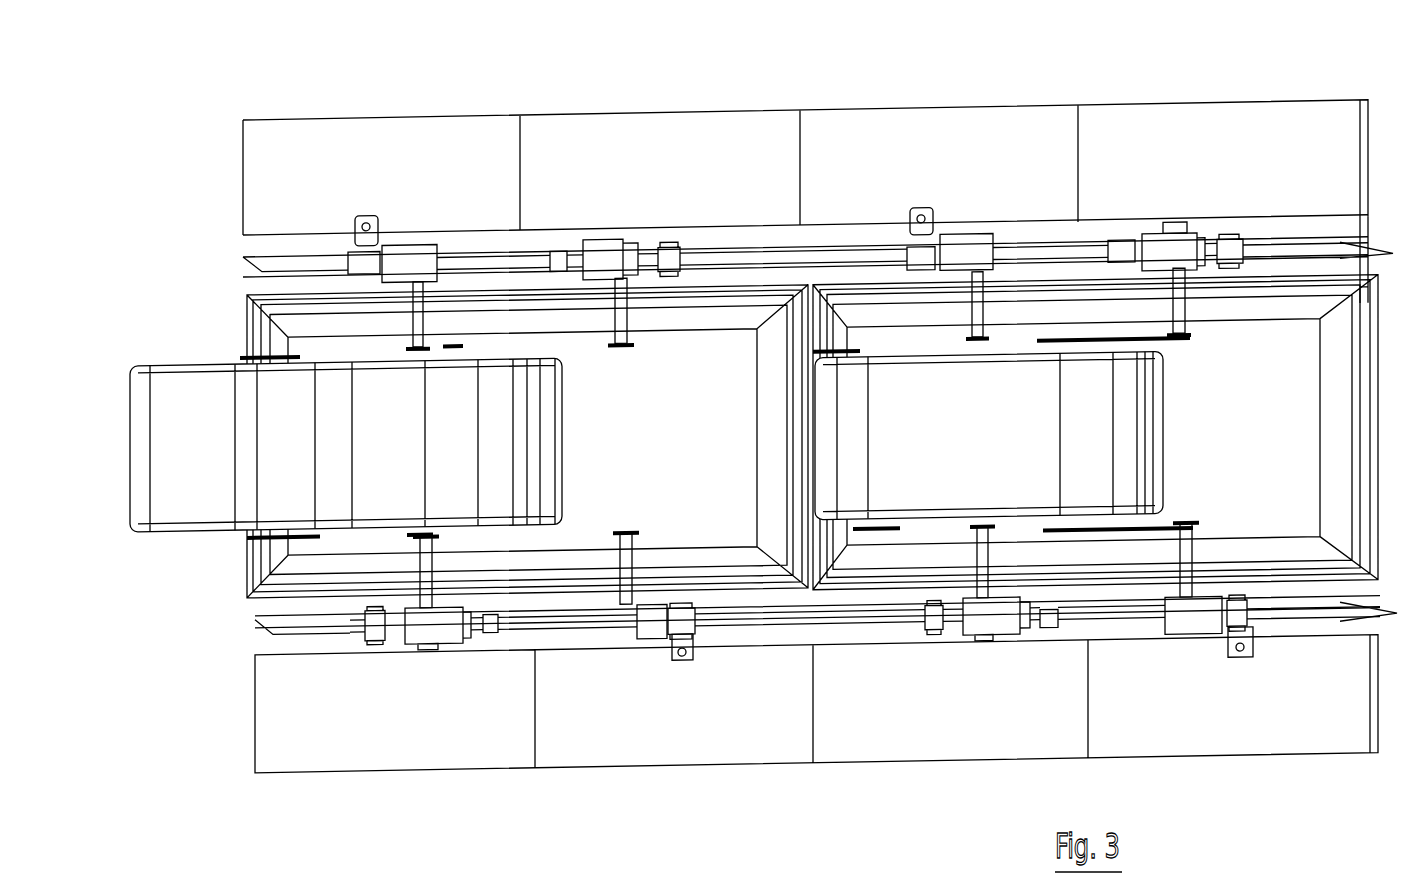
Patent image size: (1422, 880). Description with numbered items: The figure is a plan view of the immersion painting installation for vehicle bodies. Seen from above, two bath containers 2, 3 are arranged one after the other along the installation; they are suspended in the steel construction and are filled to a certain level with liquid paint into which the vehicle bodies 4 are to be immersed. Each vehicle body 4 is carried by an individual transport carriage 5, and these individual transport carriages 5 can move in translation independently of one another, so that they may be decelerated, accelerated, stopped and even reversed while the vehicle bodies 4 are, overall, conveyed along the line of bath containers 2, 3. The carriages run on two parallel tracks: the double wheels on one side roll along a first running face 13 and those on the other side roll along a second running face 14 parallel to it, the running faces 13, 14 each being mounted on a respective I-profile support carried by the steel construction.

The bath container 2 is at (671, 491).
The bath container 3 is at (1211, 479).
The vehicle body 4 is at (228, 463).
The individual transport carriage 5 is at (530, 620).
The first running face 13 is at (1383, 613).
The second running face 14 is at (1371, 249).